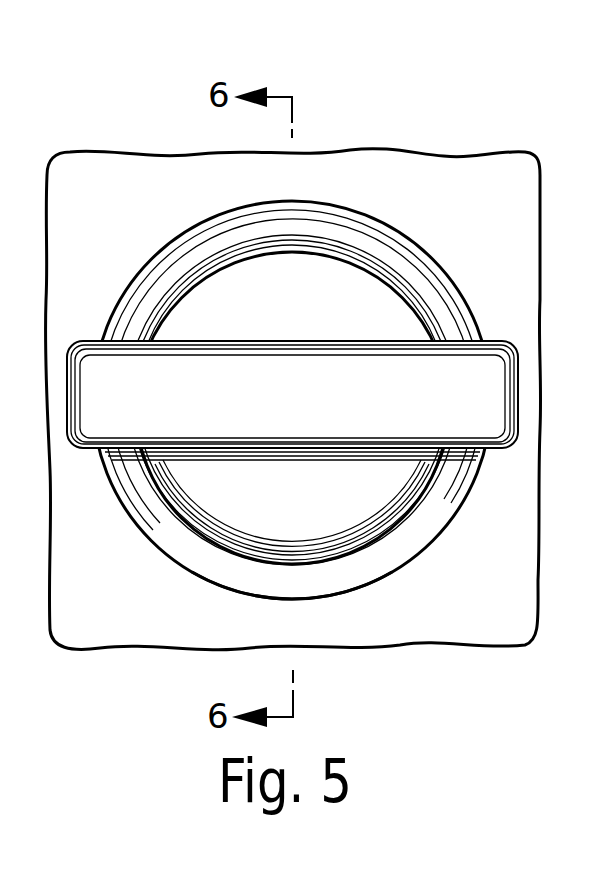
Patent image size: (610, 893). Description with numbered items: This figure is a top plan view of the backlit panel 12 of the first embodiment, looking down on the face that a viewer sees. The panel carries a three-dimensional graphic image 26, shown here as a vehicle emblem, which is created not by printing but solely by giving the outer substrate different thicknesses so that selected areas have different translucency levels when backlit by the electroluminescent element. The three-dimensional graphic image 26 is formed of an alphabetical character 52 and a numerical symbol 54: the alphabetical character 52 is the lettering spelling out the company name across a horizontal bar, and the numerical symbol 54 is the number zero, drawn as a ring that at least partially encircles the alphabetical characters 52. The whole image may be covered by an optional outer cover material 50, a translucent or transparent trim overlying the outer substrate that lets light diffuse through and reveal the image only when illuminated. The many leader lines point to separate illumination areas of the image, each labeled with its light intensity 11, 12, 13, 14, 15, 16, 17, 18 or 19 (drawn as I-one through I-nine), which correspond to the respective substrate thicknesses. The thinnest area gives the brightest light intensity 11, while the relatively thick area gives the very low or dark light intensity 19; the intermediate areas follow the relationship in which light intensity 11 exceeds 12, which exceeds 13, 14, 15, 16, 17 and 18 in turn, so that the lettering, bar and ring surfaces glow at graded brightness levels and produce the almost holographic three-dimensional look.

The outer cover material 50 is at (17, 40).
The three-dimensional graphic image 26 is at (456, 262).
The alphabetical character 52 is at (237, 373).
The numerical symbol 54 is at (403, 258).
The light intensity 11 is at (330, 436).
The light intensity 12 is at (292, 570).
The light intensity 13 is at (240, 450).
The light intensity 14 is at (193, 453).
The light intensity 15 is at (452, 480).
The light intensity 16 is at (230, 527).
The light intensity 17 is at (274, 462).
The light intensity 18 is at (170, 374).
The light intensity 19 is at (312, 293).